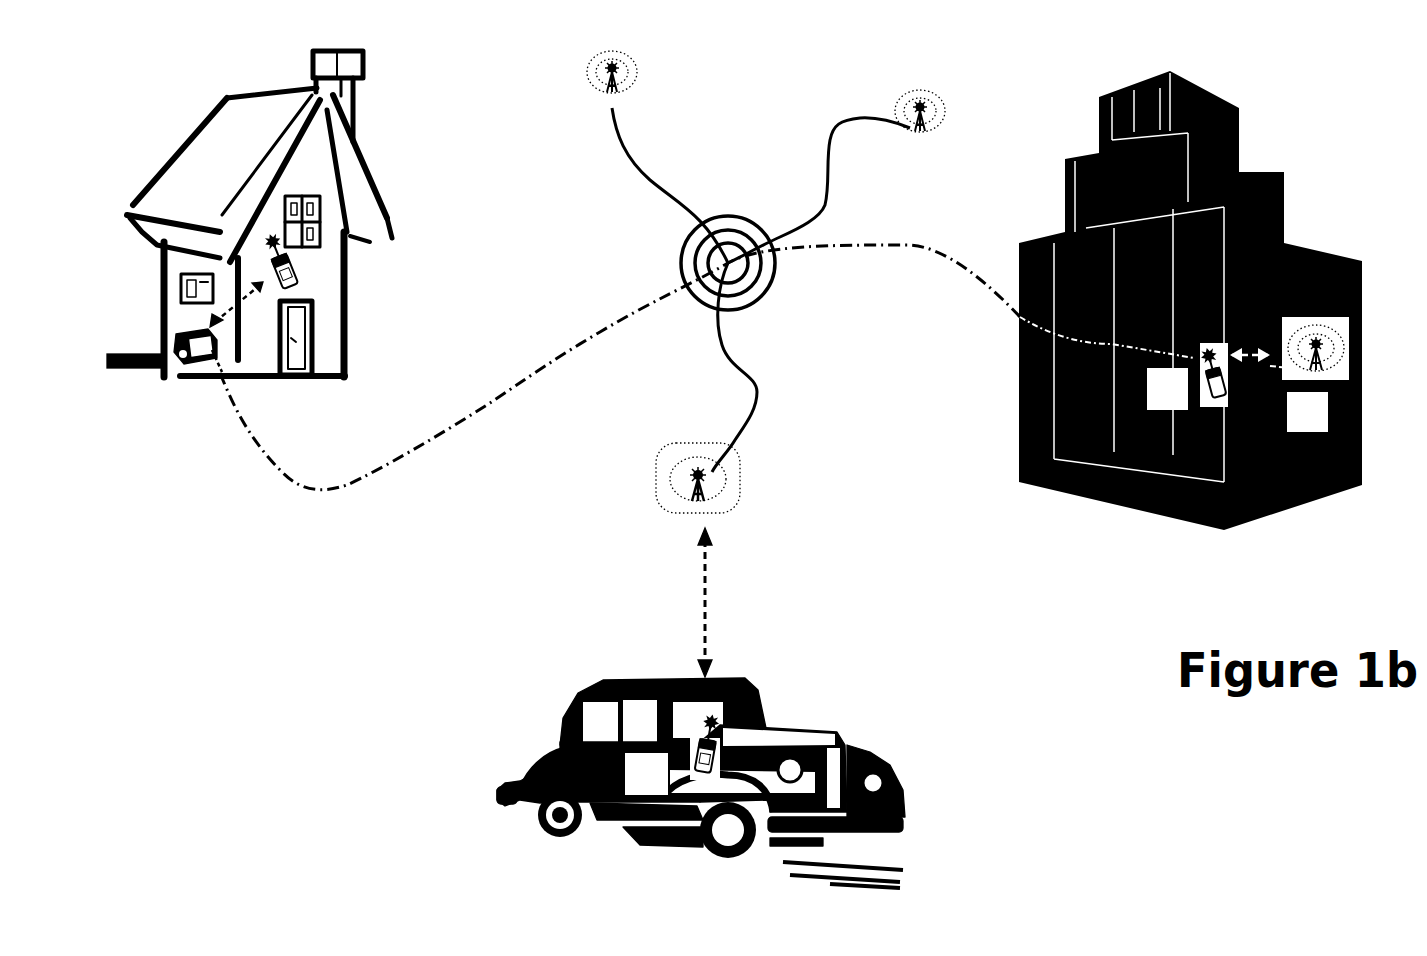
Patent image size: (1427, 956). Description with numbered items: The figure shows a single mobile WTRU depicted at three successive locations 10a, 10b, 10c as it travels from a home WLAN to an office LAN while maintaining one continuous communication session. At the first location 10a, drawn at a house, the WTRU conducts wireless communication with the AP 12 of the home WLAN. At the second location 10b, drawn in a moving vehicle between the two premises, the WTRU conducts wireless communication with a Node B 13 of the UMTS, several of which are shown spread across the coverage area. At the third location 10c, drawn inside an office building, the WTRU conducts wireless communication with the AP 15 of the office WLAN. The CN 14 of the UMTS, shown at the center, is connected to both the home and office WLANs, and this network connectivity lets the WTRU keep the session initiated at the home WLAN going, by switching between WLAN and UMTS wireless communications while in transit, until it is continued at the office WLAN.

The WTRU at home WLAN location 10a is at (302, 260).
The WTRU at in-transit location 10b is at (672, 754).
The WTRU at office WLAN location 10c is at (1208, 376).
The AP of home WLAN 12 is at (185, 327).
The Node B 13 is at (753, 282).
The CN 14 is at (728, 245).
The AP of office WLAN 15 is at (1309, 374).